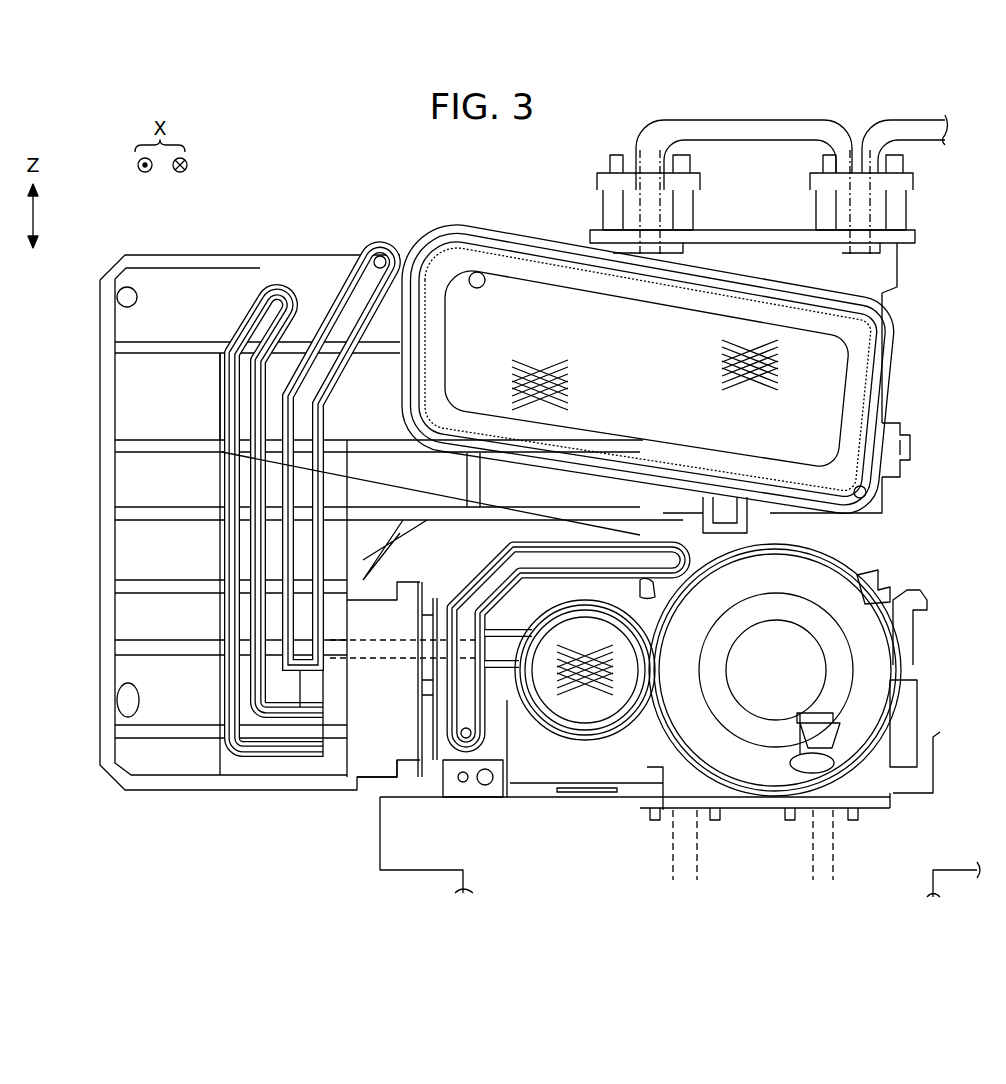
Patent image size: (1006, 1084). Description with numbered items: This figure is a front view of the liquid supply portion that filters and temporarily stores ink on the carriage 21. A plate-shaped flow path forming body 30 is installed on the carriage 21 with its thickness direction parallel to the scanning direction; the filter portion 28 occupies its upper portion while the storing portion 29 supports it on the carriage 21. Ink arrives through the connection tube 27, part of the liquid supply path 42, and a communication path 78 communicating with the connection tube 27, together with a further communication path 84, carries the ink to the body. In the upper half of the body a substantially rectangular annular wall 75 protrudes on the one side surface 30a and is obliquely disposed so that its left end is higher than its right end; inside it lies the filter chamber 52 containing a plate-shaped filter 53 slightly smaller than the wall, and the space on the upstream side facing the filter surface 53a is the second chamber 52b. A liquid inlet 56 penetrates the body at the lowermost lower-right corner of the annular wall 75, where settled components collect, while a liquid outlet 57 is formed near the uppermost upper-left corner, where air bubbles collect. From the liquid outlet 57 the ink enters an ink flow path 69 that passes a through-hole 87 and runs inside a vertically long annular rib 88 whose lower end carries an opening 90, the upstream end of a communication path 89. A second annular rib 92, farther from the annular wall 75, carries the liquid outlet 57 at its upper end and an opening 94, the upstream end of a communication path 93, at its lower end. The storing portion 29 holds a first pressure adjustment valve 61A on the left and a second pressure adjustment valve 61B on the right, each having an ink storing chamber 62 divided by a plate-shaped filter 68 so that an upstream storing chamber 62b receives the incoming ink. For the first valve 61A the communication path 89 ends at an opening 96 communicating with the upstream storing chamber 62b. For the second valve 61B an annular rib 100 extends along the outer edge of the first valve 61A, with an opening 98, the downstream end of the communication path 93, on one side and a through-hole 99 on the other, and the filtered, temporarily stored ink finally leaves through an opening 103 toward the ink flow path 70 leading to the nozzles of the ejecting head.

The carriage 21 is at (380, 862).
The connection tube 27 is at (850, 122).
The filter portion 28 is at (915, 272).
The storing portion 29 is at (925, 630).
The flow path forming body 30 is at (152, 257).
The side surface 30a is at (130, 320).
The liquid supply path 42 is at (892, 124).
The filter chamber 52 is at (910, 449).
The second chamber 52b is at (912, 449).
The filter 53 is at (862, 353).
The surface of the filter 53a is at (848, 388).
The liquid inlet 56 is at (873, 488).
The liquid outlet 57 is at (268, 296).
The first pressure adjustment valve 61A is at (503, 737).
The second pressure adjustment valve 61B is at (827, 548).
The ink storing chamber 62 is at (553, 712).
The upstream storing chamber 62b is at (582, 712).
The filter 68 is at (613, 703).
The ink flow path 69 is at (240, 481).
The ink flow path 70 is at (693, 847).
The annular wall 75 is at (555, 244).
The communication path 78 is at (868, 212).
The communication path 84 is at (655, 212).
The through-hole 87 is at (379, 250).
The annular rib 88 is at (334, 300).
The communication path 89 is at (400, 643).
The opening 90 is at (303, 650).
The annular rib 92 is at (224, 388).
The communication path 93 is at (380, 730).
The opening 94 is at (303, 735).
The opening 96 is at (500, 647).
The opening 98 is at (467, 740).
The through-hole 99 is at (667, 578).
The annular rib 100 is at (470, 580).
The opening 103 is at (820, 703).